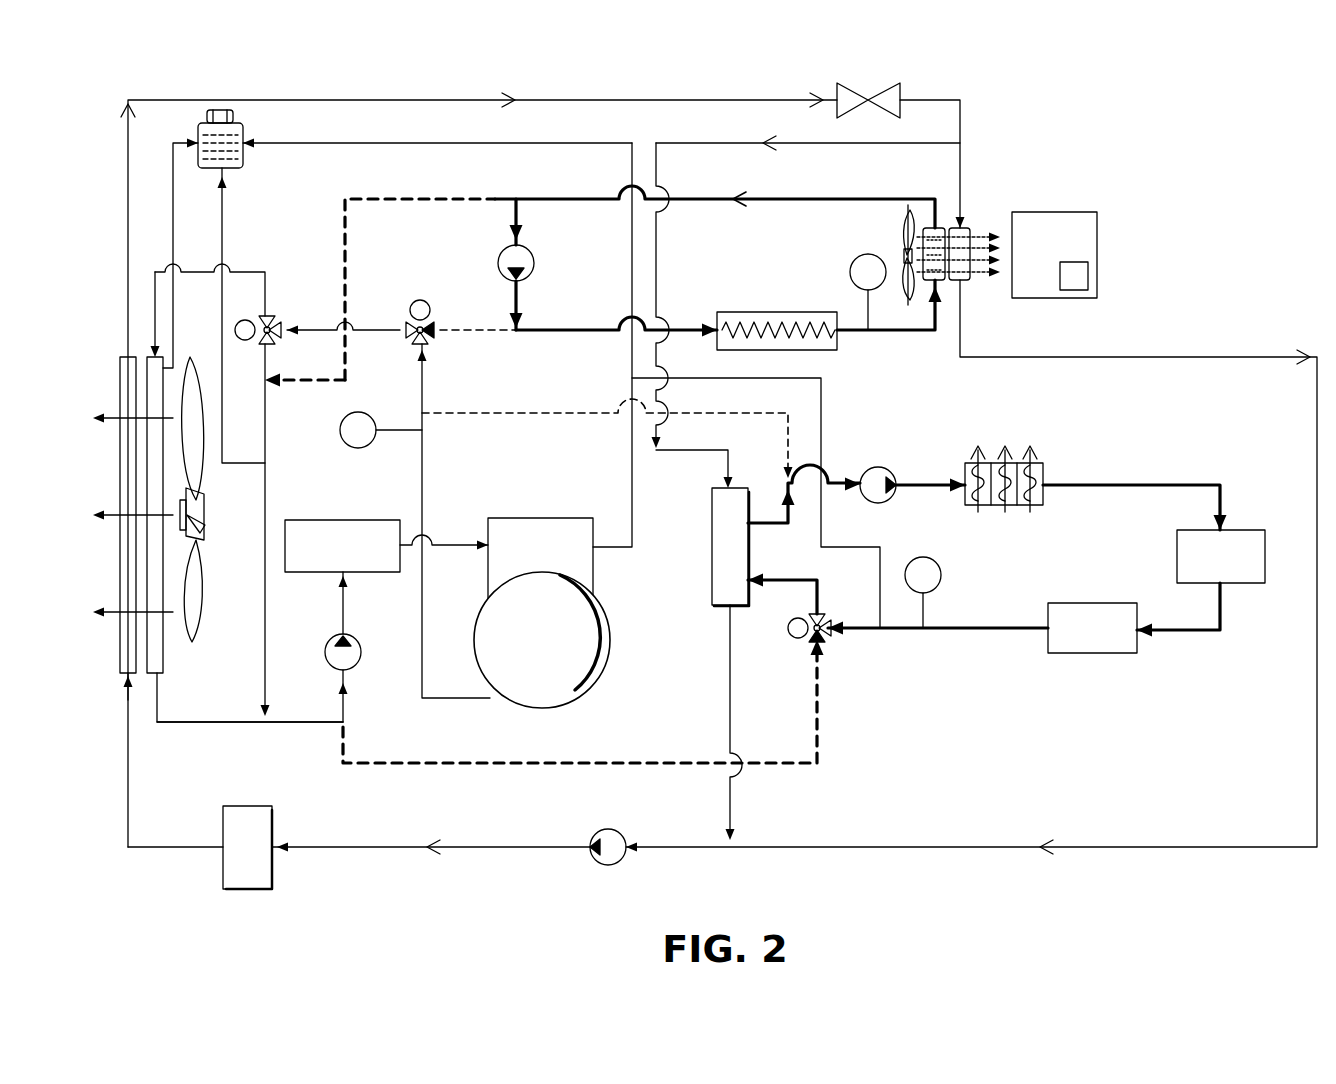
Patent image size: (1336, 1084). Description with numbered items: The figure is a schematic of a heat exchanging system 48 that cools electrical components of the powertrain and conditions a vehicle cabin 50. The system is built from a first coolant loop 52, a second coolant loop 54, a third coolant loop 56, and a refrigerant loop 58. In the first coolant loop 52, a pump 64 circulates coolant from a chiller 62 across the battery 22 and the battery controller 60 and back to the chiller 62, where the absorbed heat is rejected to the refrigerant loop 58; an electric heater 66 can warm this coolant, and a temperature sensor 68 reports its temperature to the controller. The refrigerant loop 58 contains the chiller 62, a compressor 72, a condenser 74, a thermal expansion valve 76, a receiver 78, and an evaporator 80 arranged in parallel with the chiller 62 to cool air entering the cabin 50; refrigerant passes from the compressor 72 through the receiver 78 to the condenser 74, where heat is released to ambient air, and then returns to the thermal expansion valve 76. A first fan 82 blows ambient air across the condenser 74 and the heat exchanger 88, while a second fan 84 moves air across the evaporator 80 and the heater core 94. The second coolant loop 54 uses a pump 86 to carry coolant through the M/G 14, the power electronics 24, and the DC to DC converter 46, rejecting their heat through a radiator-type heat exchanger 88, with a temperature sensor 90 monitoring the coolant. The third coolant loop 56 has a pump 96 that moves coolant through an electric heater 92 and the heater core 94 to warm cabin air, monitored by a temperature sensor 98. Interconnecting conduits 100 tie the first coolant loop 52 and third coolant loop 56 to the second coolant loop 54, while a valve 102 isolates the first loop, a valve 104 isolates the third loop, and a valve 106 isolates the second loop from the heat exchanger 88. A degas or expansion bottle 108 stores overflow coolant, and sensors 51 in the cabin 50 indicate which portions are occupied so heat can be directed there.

The M/G 14 is at (543, 708).
The battery 22 is at (1267, 557).
The power electronics 24 is at (595, 565).
The DC to DC converter 46 is at (345, 520).
The heat exchanging system 48 is at (1130, 121).
The vehicle cabin 50 is at (1060, 212).
The sensors 51 is at (1090, 278).
The first coolant loop 52 is at (1143, 454).
The second coolant loop 54 is at (309, 752).
The third coolant loop 56 is at (792, 183).
The refrigerant loop 58 is at (1229, 336).
The battery controller 60 is at (1092, 603).
The chiller 62 is at (712, 547).
The pump 64 is at (878, 467).
The electric heater 66 is at (1043, 475).
The temperature sensor 68 is at (941, 575).
The compressor 72 is at (608, 829).
The condenser 74 is at (118, 645).
The thermal expansion valve 76 is at (845, 80).
The receiver 78 is at (223, 827).
The evaporator 80 is at (962, 226).
The first fan 82 is at (205, 515).
The second fan 84 is at (905, 302).
The pump 86 is at (362, 652).
The heat exchanger 88 is at (160, 675).
The temperature sensor 90 is at (340, 430).
The electric heater 92 is at (755, 312).
The heater core 94 is at (940, 226).
The pump 96 is at (498, 263).
The temperature sensor 98 is at (850, 272).
The interconnecting conduits 100 is at (405, 195).
The valve 102 is at (830, 638).
The valve 104 is at (406, 328).
The valve 106 is at (275, 316).
The degas or expansion bottle 108 is at (243, 157).